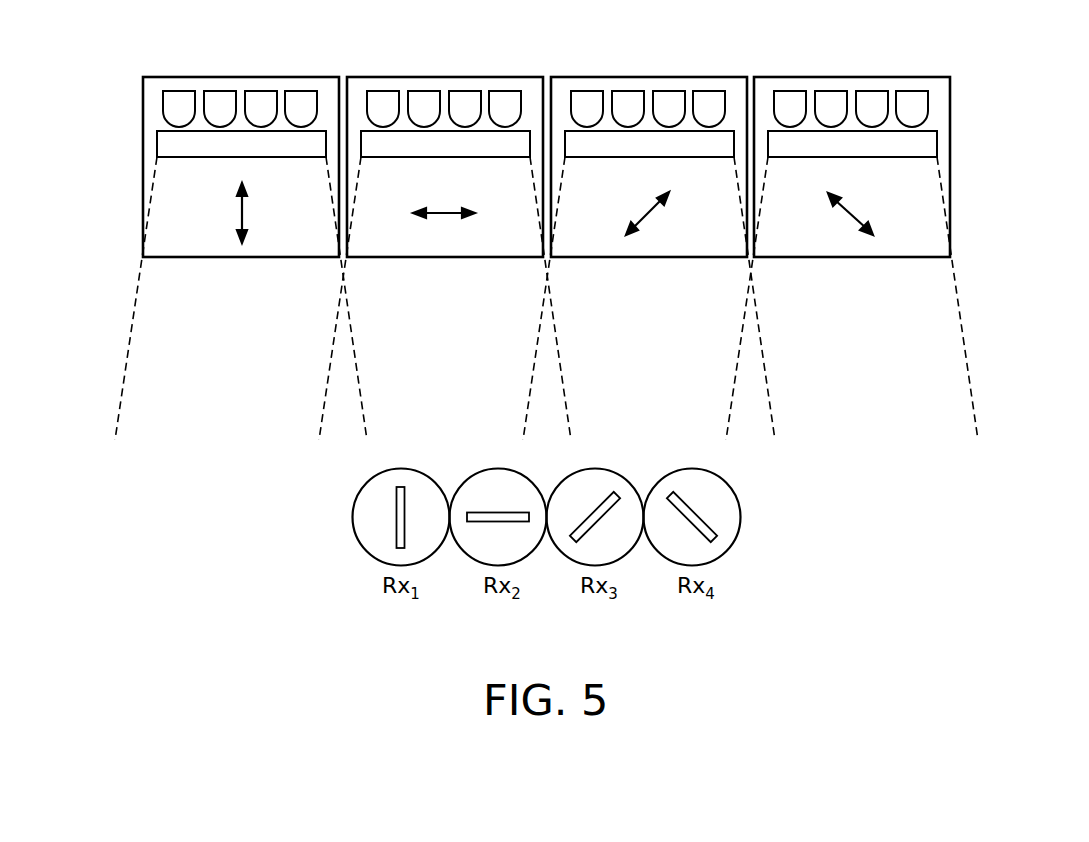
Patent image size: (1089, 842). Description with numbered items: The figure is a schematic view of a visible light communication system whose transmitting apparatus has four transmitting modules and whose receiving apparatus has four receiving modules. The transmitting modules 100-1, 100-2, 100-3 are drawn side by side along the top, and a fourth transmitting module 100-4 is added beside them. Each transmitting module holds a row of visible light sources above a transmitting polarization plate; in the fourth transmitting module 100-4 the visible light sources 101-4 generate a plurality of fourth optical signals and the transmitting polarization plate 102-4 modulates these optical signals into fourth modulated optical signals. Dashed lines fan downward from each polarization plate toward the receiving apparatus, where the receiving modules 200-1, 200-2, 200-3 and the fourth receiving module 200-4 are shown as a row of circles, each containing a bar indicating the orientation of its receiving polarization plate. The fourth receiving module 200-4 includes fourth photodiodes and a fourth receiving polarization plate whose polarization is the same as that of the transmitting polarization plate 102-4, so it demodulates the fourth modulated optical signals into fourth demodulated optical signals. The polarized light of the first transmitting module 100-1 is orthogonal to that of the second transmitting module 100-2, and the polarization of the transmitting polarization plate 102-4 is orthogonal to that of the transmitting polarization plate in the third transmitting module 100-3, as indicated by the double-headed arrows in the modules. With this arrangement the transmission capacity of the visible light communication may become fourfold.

The first transmitting module 100-1 is at (250, 77).
The second transmitting module 100-2 is at (462, 77).
The third transmitting module 100-3 is at (665, 77).
The fourth transmitting module 100-4 is at (892, 229).
The visible light sources 101-4 is at (916, 105).
The transmitting polarization plate 102-4 is at (913, 147).
The first receiving module 200-1 is at (353, 517).
The second receiving module 200-2 is at (473, 470).
The third receiving module 200-3 is at (618, 470).
The fourth receiving module 200-4 is at (741, 517).